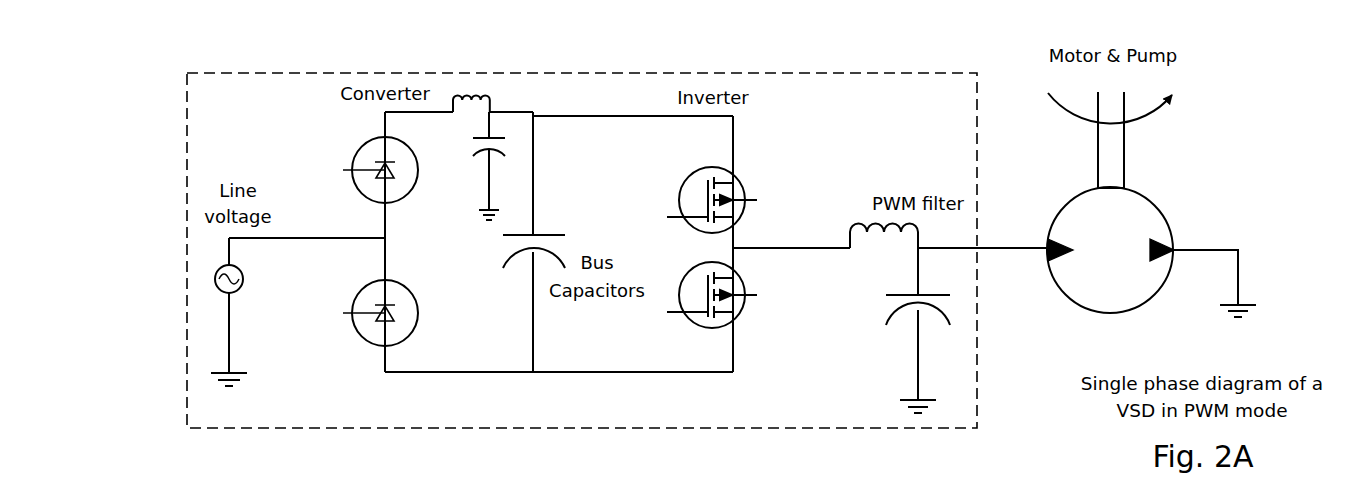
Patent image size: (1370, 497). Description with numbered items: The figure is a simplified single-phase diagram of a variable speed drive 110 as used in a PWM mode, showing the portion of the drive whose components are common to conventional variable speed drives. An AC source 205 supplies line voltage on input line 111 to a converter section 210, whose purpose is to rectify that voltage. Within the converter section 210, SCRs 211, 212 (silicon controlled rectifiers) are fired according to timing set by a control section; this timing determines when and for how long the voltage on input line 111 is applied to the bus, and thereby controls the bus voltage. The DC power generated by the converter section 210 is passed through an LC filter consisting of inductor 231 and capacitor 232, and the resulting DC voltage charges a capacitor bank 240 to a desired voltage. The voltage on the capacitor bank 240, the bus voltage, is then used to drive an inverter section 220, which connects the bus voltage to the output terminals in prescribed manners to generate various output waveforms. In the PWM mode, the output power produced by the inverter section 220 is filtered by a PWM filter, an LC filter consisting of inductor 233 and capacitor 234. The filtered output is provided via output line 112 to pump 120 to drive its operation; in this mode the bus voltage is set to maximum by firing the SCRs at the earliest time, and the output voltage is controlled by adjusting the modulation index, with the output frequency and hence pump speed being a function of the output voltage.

The variable speed drive 110 is at (818, 72).
The input line 111 is at (328, 237).
The output line 112 is at (1012, 251).
The pump 120 is at (1078, 305).
The AC source 205 is at (240, 290).
The converter section 210 is at (363, 267).
The SCR 211 is at (355, 152).
The SCR 212 is at (355, 296).
The inverter section 220 is at (678, 385).
The inductor 231 is at (494, 86).
The capacitor 232 is at (470, 166).
The inductor 233 is at (847, 220).
The capacitor 234 is at (882, 302).
The capacitor bank 240 is at (512, 280).